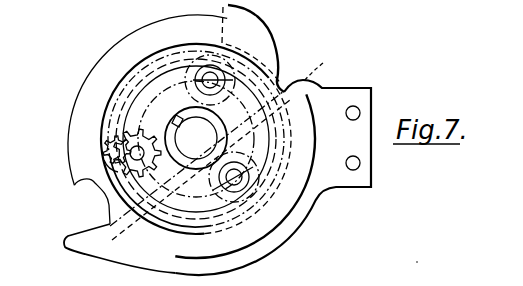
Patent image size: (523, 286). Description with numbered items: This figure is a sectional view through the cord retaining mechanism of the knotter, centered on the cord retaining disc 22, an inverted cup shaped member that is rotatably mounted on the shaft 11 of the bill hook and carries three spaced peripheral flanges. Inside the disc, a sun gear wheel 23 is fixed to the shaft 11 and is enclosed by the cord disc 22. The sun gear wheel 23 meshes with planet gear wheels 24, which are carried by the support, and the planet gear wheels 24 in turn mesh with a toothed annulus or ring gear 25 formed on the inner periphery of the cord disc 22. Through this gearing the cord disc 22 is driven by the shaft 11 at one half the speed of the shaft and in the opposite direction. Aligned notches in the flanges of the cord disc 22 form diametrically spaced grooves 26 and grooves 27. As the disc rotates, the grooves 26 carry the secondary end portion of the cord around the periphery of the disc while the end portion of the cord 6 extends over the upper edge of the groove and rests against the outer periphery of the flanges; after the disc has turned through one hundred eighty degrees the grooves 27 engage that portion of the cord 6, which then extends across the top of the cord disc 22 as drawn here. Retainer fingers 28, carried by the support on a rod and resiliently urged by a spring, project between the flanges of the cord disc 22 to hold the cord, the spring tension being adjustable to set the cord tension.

The hidden locking element 6 is at (297, 40).
The shaft 11 is at (196, 138).
The cord retaining disc 22 is at (68, 168).
The sun gear wheel 23 is at (152, 130).
The planet gear wheels 24 is at (117, 160).
The ring gear 25 is at (112, 134).
The grooves 26 is at (98, 199).
The grooves 27 is at (288, 76).
The retainer fingers 28 is at (287, 227).